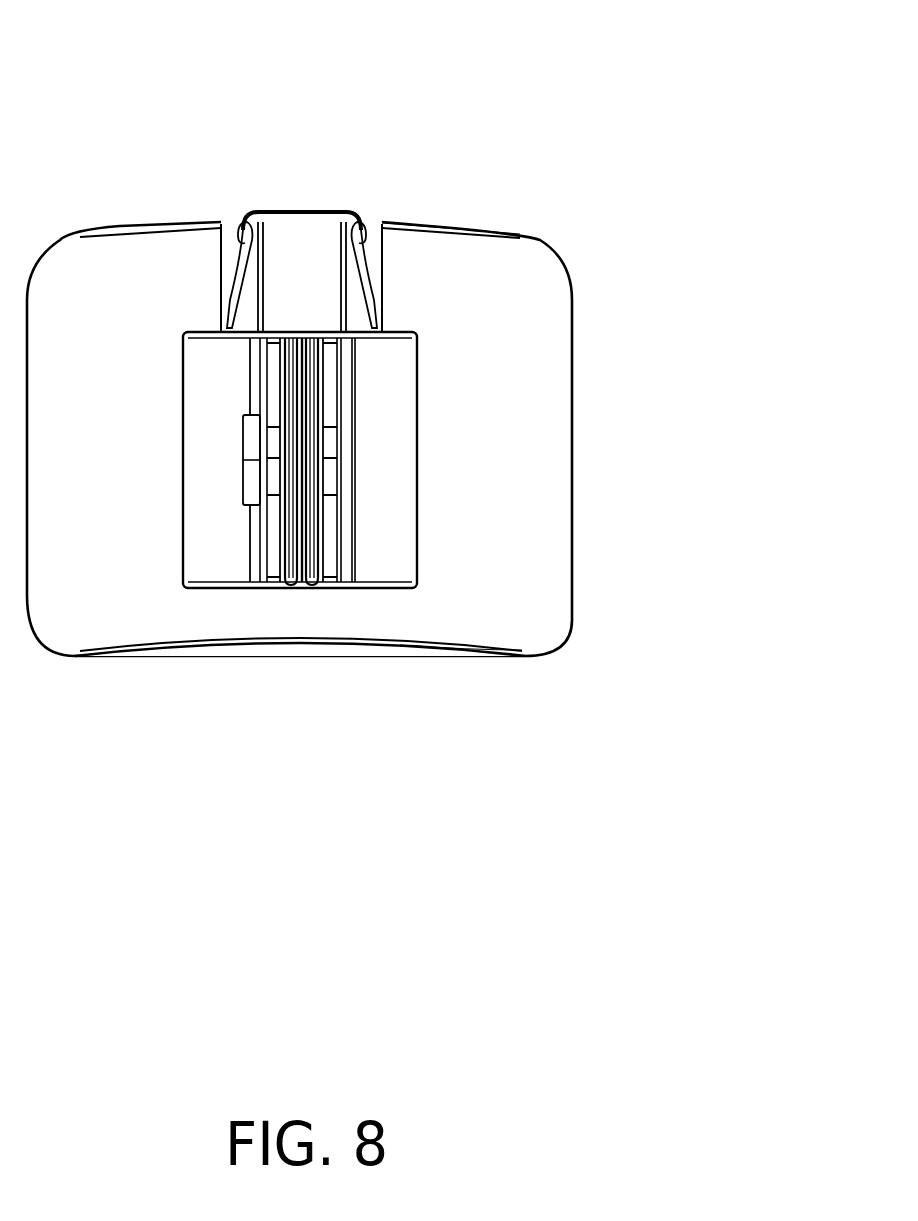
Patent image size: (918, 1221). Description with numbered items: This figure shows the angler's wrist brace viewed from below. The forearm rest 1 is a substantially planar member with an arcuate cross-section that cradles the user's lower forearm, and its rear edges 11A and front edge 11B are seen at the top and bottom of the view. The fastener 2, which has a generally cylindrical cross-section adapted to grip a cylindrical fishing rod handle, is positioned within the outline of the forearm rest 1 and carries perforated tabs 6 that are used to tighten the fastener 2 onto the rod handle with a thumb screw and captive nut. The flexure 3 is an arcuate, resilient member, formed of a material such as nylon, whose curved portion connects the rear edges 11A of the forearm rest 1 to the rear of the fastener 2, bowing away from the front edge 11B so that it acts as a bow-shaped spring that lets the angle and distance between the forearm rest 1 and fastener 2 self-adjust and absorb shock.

The forearm rest 1 is at (580, 452).
The fastener 2 is at (432, 518).
The flexure 3 is at (306, 198).
The perforated tabs 6 is at (270, 588).
The rear edges of forearm rest 11A is at (412, 225).
The front edge of forearm rest 11B is at (442, 650).